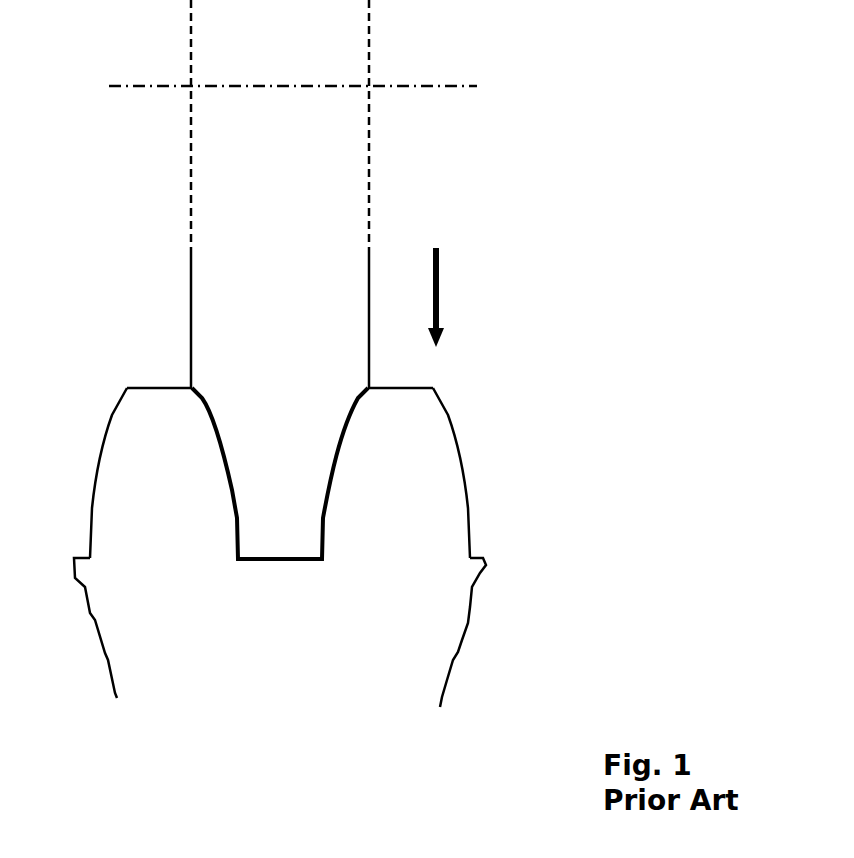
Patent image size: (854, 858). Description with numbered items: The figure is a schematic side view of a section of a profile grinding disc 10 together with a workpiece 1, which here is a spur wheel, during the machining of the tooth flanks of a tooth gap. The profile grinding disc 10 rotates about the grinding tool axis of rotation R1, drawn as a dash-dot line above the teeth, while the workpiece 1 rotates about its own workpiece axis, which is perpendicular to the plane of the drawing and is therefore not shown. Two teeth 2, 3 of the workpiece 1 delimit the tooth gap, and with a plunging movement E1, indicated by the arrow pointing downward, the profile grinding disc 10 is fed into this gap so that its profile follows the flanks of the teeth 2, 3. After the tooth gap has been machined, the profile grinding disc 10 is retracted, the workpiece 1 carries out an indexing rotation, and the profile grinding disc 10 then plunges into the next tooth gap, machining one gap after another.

The workpiece 1 is at (460, 622).
The tooth 2 is at (448, 457).
The tooth 3 is at (97, 482).
The profile grinding disc 10 is at (191, 271).
The grinding tool axis of rotation R1 is at (313, 85).
The plunging movement E1 is at (432, 284).